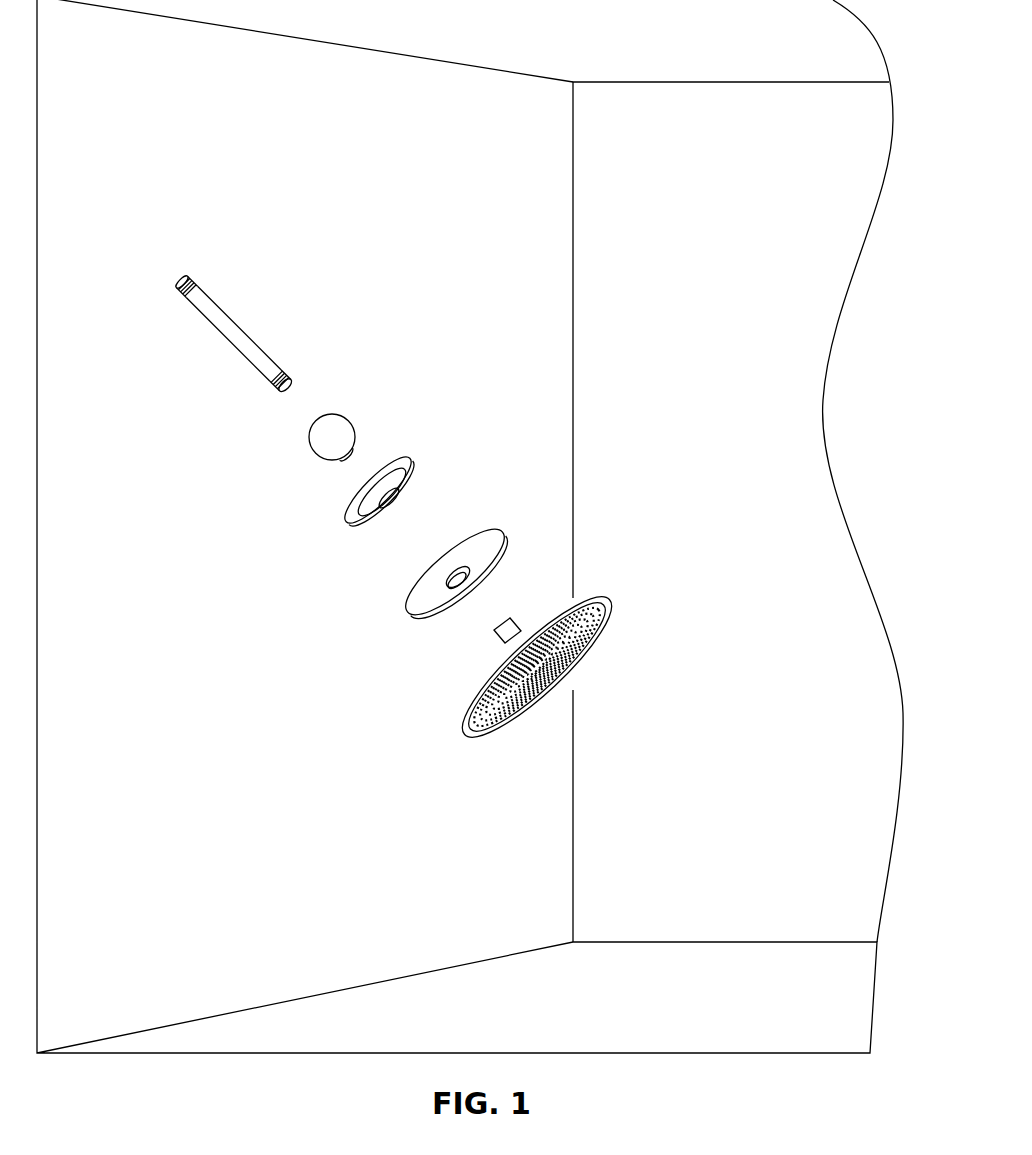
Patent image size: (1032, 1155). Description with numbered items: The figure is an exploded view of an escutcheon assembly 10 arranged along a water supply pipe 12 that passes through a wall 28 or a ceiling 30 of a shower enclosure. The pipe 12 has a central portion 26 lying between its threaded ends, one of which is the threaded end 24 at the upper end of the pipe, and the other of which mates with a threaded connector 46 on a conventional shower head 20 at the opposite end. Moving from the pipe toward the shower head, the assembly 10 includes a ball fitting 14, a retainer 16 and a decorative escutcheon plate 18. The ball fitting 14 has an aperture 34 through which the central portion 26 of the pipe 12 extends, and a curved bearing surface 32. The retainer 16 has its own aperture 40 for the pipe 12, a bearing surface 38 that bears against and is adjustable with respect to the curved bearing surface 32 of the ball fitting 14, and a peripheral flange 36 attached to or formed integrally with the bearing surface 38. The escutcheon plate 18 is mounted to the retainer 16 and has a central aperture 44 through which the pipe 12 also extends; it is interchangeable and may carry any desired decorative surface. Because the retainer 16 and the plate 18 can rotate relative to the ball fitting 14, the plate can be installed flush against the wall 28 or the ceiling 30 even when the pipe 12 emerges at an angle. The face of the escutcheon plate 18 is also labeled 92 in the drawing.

The assembly 10 is at (128, 184).
The water supply pipe 12 is at (236, 300).
The ball fitting 14 is at (326, 445).
The retainer 16 is at (406, 495).
The escutcheon plate 18 is at (442, 588).
The shower head 20 is at (571, 656).
The threaded end 24 is at (190, 274).
The central portion 26 is at (216, 338).
The wall 28 is at (300, 376).
The ceiling 30 is at (338, 52).
The curved bearing surface 32 is at (343, 422).
The aperture 34 is at (345, 458).
The peripheral flange 36 is at (392, 463).
The bearing surface 38 is at (372, 502).
The aperture 40 is at (396, 503).
The central aperture 44 is at (461, 584).
The threaded connector 46 is at (512, 626).
The flange face 92 is at (500, 556).